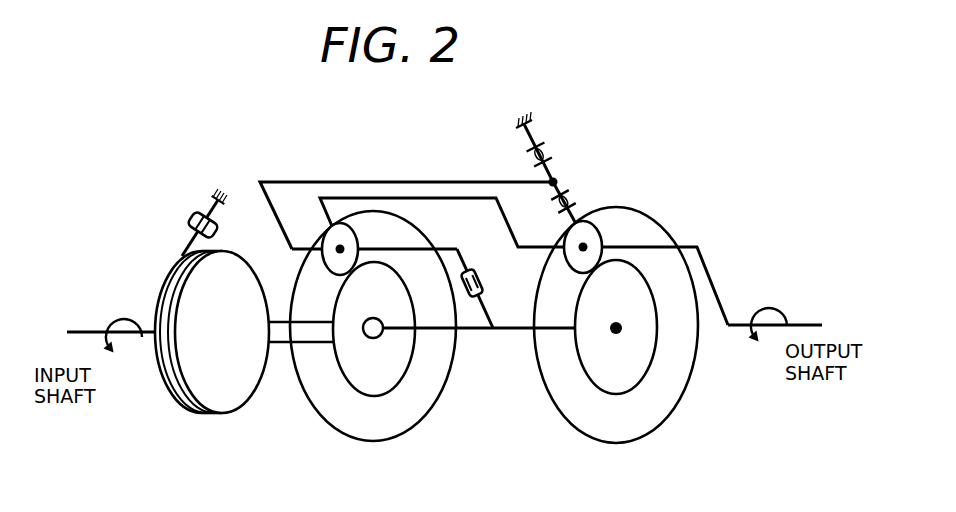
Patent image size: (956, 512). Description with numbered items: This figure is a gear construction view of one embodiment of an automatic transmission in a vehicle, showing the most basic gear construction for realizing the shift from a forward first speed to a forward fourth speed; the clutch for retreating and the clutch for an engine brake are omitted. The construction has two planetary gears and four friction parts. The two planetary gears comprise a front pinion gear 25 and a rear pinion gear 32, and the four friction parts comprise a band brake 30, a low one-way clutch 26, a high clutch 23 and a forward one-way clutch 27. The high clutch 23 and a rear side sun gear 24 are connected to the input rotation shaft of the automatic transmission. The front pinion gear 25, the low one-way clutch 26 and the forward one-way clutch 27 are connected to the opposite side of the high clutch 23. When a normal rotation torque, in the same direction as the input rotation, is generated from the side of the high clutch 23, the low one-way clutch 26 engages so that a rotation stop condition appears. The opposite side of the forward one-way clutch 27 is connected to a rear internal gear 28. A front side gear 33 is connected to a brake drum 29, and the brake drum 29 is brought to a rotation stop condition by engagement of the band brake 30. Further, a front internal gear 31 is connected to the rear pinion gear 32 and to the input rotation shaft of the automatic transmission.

The high clutch 23 is at (483, 282).
The rear side sun gear 24 is at (657, 343).
The front pinion gear 25 is at (370, 235).
The low one-way clutch 26 is at (548, 145).
The forward one-way clutch 27 is at (573, 190).
The rear internal gear 28 is at (672, 235).
The brake drum 29 is at (267, 367).
The band brake 30 is at (195, 217).
The front internal gear 31 is at (413, 222).
The rear pinion gear 32 is at (595, 228).
The front side gear 33 is at (415, 357).